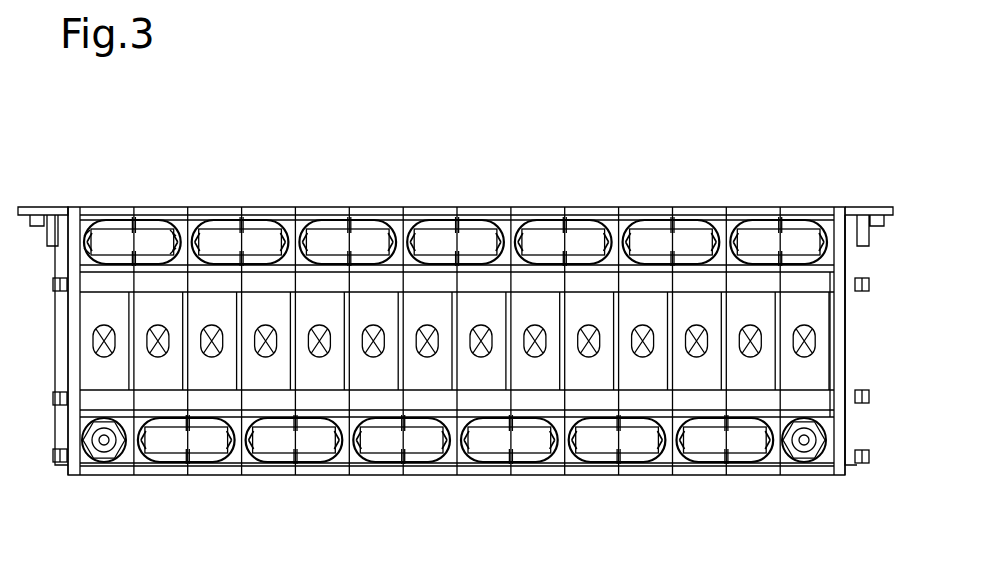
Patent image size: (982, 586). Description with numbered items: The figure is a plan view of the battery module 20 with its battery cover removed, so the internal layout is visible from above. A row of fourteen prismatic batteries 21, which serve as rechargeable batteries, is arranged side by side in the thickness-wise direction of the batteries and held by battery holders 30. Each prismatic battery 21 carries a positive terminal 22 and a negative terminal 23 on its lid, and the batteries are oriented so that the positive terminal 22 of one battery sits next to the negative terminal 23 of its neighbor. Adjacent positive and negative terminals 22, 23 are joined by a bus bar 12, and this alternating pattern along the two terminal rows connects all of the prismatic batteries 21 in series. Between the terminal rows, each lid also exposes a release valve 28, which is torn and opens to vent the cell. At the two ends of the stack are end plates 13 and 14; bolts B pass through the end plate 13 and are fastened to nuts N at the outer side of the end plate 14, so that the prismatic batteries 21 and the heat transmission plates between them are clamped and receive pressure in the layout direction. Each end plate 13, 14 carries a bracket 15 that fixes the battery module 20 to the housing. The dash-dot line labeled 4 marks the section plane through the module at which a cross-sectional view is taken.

The battery module 20 is at (170, 138).
The bus bar 12 is at (425, 237).
The end plate 13 is at (75, 468).
The end plate 14 is at (838, 465).
The bracket 15 is at (32, 206).
The prismatic battery 21 is at (795, 303).
The positive terminal 22 is at (108, 221).
The negative terminal 23 is at (158, 221).
The release valve 28 is at (695, 352).
The battery holder 30 is at (793, 478).
The section line IV-IV 4 is at (402, 206).
The bolt B is at (55, 292).
The nut N is at (868, 292).